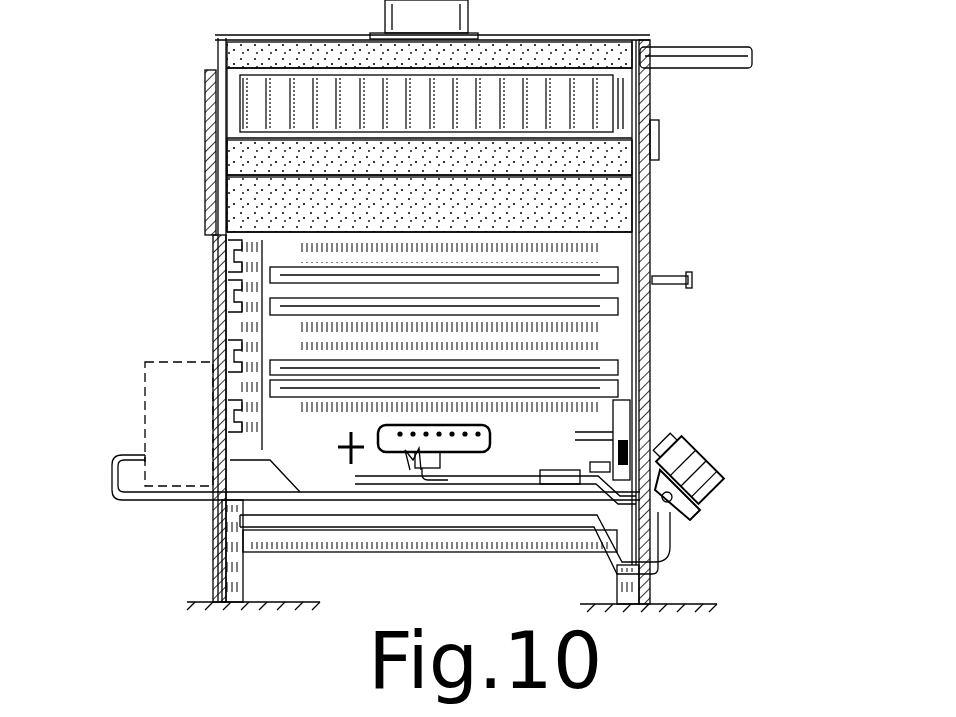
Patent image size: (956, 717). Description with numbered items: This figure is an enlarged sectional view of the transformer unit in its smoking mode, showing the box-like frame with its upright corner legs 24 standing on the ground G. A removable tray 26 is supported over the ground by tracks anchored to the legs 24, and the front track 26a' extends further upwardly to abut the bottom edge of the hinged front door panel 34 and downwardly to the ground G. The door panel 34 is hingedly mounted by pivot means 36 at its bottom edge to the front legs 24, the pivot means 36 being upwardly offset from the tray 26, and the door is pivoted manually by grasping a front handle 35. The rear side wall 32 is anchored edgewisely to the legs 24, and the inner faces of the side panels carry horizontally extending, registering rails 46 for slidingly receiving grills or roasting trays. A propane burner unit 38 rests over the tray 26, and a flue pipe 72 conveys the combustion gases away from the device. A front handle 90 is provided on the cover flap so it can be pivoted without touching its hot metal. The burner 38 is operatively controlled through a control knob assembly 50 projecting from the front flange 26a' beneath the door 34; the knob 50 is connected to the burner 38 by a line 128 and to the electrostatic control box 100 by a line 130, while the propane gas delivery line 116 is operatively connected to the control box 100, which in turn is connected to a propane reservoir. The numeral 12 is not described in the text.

The oven 12 is at (213, 335).
The corner legs 24 is at (213, 596).
The removable tray 26 is at (300, 548).
The front track 26a' is at (668, 435).
The rear side wall 32 is at (213, 262).
The front door panel 34 is at (645, 338).
The front handle 35 is at (700, 282).
The pivot means 36 is at (650, 432).
The propane burner unit 38 is at (400, 470).
The rails 46 is at (305, 288).
The control knob assembly 50 is at (728, 470).
The flue pipe 72 is at (470, 8).
The front handle 90 is at (718, 48).
The electrostatic control box 100 is at (145, 430).
The propane gas delivery line 116 is at (150, 502).
The line 128 is at (500, 470).
The line 130 is at (438, 470).
The ground G is at (695, 606).